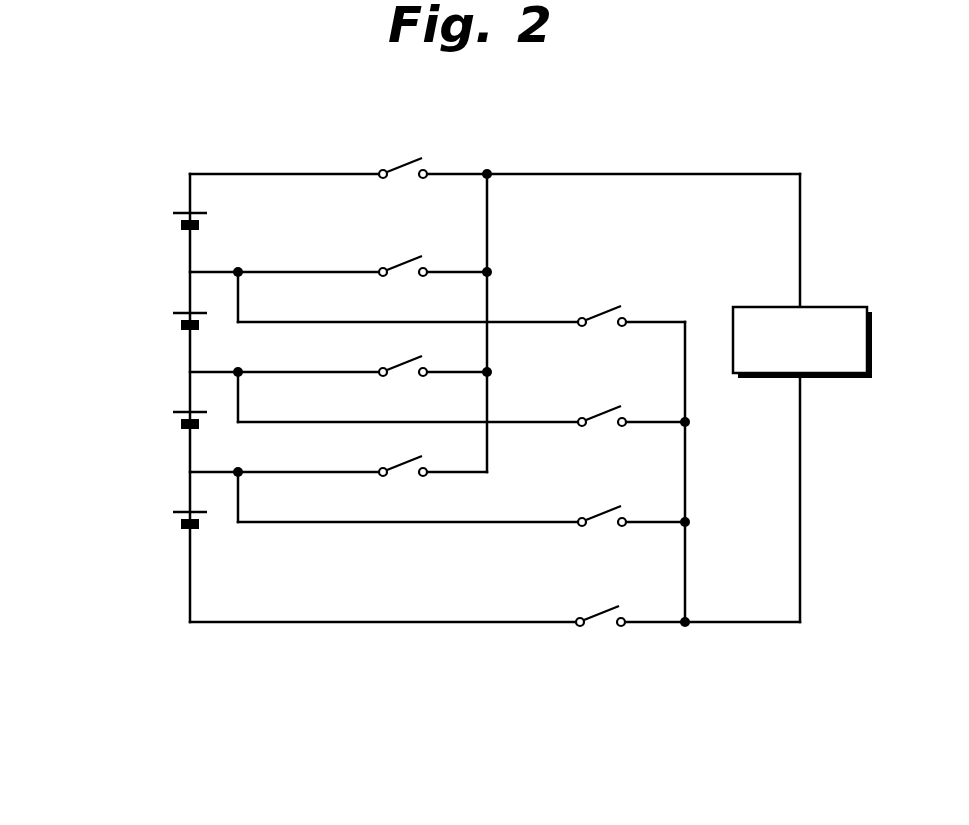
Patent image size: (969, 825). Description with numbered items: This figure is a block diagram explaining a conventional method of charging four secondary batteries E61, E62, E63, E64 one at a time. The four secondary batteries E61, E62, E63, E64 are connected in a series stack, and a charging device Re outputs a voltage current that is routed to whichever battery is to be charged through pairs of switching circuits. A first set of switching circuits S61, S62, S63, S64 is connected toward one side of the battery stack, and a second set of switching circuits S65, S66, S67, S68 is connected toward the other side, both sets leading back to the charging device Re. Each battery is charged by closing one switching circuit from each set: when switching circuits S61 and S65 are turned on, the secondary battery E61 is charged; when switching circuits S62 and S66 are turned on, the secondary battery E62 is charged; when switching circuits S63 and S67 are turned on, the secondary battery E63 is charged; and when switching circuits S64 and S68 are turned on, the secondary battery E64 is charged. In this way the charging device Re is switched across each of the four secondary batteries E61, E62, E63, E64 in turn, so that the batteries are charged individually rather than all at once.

The switching circuit S61 is at (402, 157).
The switching circuit S62 is at (403, 254).
The switching circuit S63 is at (403, 354).
The switching circuit S64 is at (403, 454).
The switching circuit S65 is at (600, 305).
The switching circuit S66 is at (600, 405).
The switching circuit S67 is at (600, 505).
The switching circuit S68 is at (601, 628).
The secondary battery E61 is at (176, 219).
The secondary battery E62 is at (176, 319).
The secondary battery E63 is at (176, 418).
The secondary battery E64 is at (176, 518).
The charging device Re is at (832, 305).